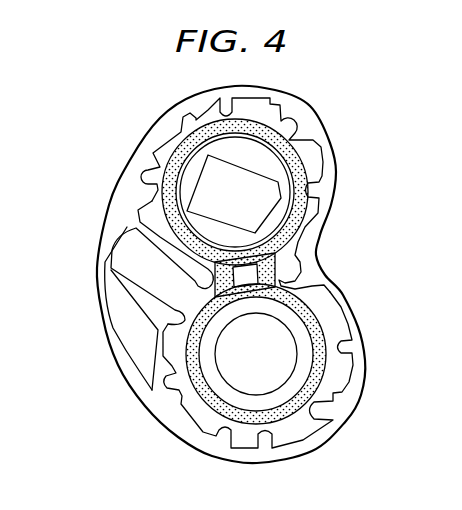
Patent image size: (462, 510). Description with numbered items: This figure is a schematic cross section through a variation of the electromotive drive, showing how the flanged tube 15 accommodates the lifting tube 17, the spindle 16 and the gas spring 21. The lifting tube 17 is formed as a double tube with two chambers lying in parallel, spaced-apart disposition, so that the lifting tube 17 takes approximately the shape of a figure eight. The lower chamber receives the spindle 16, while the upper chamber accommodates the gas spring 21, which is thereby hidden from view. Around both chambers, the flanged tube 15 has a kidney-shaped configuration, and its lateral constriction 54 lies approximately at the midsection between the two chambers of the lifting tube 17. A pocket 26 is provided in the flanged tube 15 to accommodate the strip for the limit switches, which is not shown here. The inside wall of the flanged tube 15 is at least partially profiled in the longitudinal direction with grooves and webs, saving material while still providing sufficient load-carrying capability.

The lateral constriction 54 is at (348, 259).
The flanged tube 15 is at (309, 252).
The spindle 16 is at (266, 357).
The lifting tube 17 is at (161, 202).
The gas spring 21 is at (223, 152).
The pocket 26 is at (123, 248).